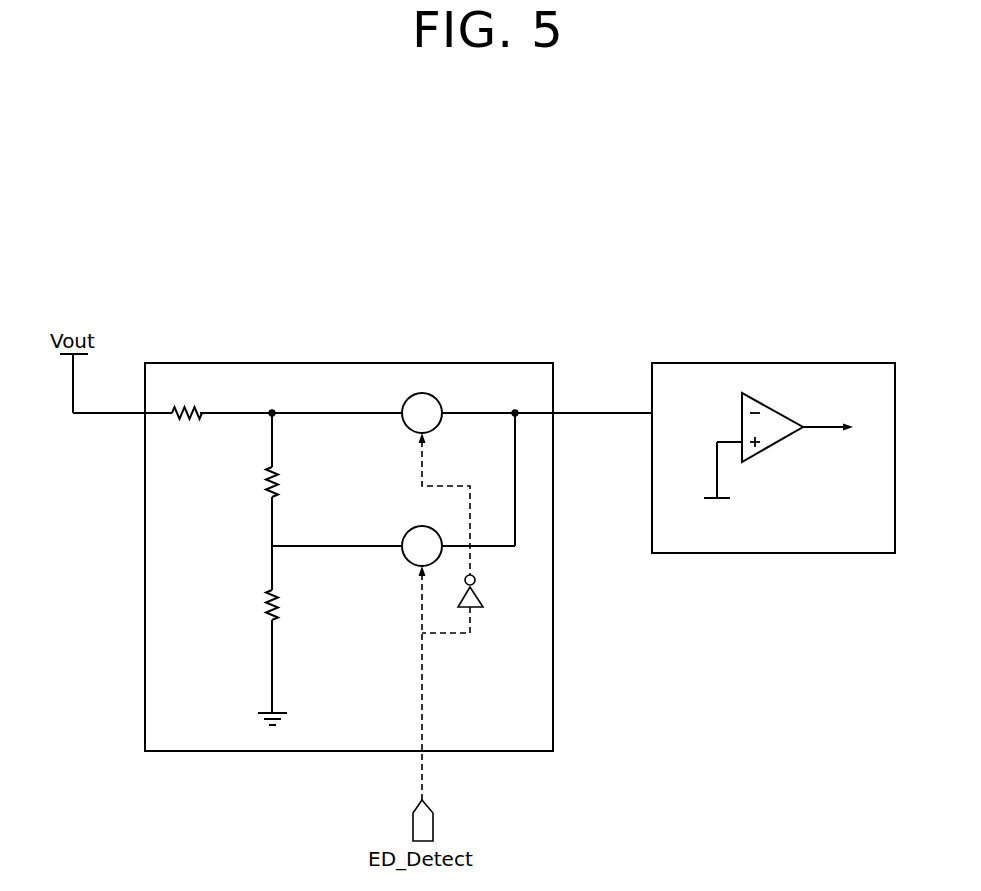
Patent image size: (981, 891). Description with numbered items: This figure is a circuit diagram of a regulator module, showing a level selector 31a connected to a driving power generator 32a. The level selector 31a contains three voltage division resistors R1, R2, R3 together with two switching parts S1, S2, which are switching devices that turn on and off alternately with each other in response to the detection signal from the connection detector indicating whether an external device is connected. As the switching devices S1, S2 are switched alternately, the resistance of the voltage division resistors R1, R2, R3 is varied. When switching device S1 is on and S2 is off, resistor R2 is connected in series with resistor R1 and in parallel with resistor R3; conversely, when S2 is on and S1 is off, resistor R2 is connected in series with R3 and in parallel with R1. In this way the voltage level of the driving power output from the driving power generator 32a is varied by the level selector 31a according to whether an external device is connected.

The level selector 31a is at (338, 363).
The driving power generator 32a is at (803, 363).
The voltage division resistor R1 is at (287, 605).
The voltage division resistor R2 is at (287, 482).
The voltage division resistor R3 is at (187, 401).
The switching device S1 is at (422, 413).
The switching device S2 is at (422, 546).